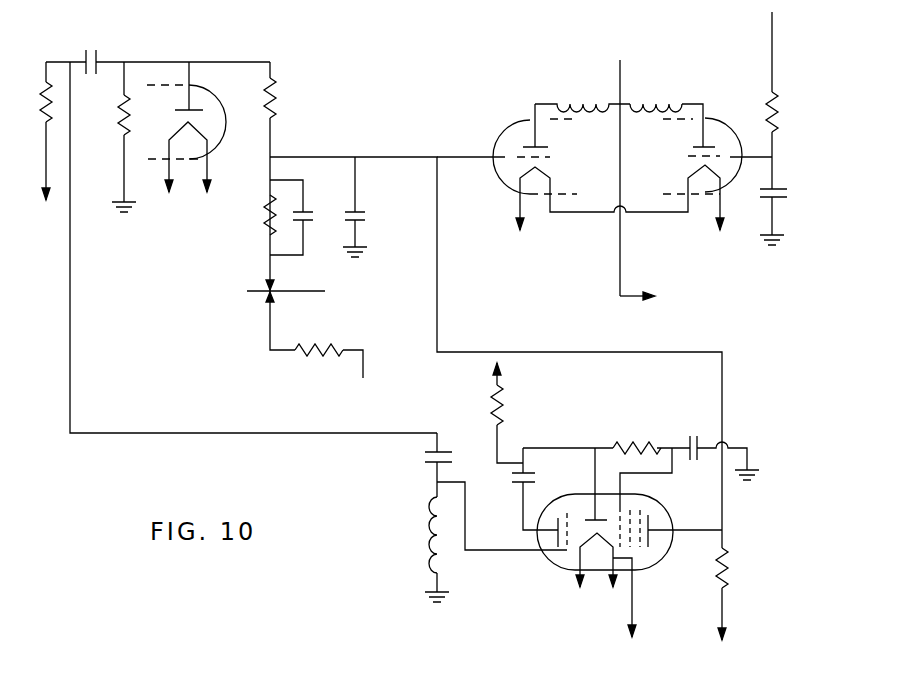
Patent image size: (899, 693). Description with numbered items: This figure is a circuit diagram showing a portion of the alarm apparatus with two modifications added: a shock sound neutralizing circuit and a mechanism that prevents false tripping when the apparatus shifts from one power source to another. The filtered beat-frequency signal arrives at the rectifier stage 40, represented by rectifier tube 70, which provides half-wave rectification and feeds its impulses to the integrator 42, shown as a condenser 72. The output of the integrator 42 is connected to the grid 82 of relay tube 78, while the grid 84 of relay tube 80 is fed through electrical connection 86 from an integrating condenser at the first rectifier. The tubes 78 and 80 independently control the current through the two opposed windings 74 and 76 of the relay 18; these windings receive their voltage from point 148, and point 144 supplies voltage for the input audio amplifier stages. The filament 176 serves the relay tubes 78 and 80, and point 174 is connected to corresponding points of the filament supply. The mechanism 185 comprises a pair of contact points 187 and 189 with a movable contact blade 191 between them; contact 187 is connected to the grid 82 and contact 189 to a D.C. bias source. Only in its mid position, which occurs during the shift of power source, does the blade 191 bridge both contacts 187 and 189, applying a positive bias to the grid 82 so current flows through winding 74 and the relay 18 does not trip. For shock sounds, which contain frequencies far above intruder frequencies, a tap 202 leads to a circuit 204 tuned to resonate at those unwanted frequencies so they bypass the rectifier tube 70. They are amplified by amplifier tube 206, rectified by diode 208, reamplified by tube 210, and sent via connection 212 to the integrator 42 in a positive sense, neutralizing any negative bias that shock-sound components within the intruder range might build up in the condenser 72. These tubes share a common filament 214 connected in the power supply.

The relay 18 is at (618, 168).
The rectifier stage 40 is at (189, 58).
The integrator 42 is at (355, 157).
The rectifier tube 70 is at (225, 132).
The condenser 72 is at (365, 216).
The relay winding 74 is at (585, 103).
The relay winding 76 is at (650, 104).
The relay tube 78 is at (503, 130).
The relay tube 80 is at (718, 138).
The grid 82 is at (517, 183).
The grid 84 is at (735, 165).
The electrical connection 86 is at (772, 30).
The voltage supply point 144 is at (46, 205).
The voltage supply point 148 is at (662, 296).
The filament connection point 174 is at (632, 640).
The filament 176 is at (558, 175).
The bias mechanism 185 is at (212, 291).
The contact point 187 is at (278, 290).
The contact point 189 is at (178, 128).
The movable contact blade 191 is at (325, 291).
The tap 202 is at (70, 378).
The tuned circuit 204 is at (427, 527).
The amplifier tube 206 is at (567, 550).
The diode 208 is at (585, 518).
The reamplifier tube 210 is at (648, 553).
The connection 212 is at (440, 308).
The common filament 214 is at (594, 560).